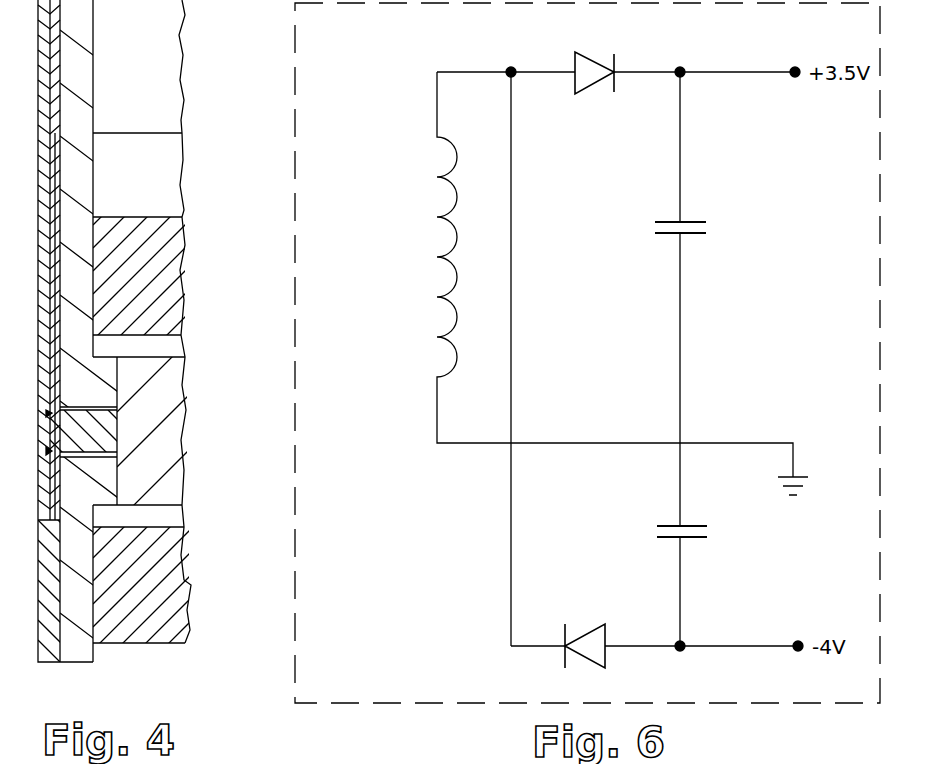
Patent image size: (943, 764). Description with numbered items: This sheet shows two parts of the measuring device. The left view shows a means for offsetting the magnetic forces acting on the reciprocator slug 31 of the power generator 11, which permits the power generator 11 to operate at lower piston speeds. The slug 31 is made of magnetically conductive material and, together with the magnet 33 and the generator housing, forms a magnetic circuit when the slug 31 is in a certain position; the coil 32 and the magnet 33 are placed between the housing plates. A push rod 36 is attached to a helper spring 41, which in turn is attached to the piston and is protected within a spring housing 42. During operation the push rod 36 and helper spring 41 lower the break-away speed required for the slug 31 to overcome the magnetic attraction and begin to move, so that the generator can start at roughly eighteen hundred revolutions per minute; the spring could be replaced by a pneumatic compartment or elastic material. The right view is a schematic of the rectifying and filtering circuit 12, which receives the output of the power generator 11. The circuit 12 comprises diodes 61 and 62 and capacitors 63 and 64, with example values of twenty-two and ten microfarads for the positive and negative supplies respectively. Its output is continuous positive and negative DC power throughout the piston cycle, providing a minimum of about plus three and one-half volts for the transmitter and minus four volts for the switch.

In FIG. 4, the reciprocator slug 31 is at (178, 382).
In FIG. 4, the coil 32 is at (172, 283).
In FIG. 4, the magnet 33 is at (162, 62).
In FIG. 4, the push rod 36 is at (103, 437).
In FIG. 4, the helper spring 41 is at (56, 38).
In FIG. 4, the spring housing 42 is at (58, 650).
In FIG. 6, the power generator 11 is at (555, 283).
In FIG. 6, the rectifying and filtering circuit 12 is at (360, 705).
In FIG. 6, the diode 61 is at (591, 60).
In FIG. 6, the diode 62 is at (589, 634).
In FIG. 6, the capacitor 63 is at (672, 240).
In FIG. 6, the capacitor 64 is at (677, 540).